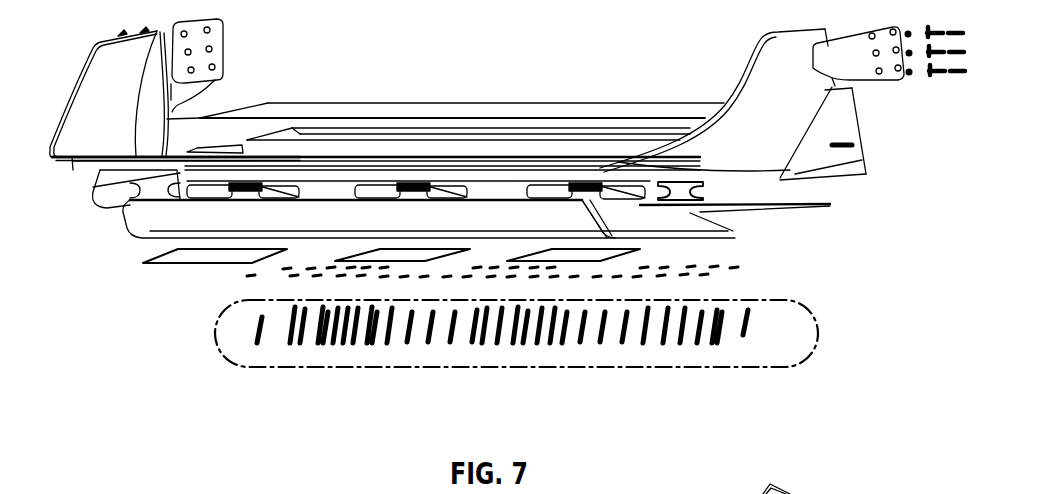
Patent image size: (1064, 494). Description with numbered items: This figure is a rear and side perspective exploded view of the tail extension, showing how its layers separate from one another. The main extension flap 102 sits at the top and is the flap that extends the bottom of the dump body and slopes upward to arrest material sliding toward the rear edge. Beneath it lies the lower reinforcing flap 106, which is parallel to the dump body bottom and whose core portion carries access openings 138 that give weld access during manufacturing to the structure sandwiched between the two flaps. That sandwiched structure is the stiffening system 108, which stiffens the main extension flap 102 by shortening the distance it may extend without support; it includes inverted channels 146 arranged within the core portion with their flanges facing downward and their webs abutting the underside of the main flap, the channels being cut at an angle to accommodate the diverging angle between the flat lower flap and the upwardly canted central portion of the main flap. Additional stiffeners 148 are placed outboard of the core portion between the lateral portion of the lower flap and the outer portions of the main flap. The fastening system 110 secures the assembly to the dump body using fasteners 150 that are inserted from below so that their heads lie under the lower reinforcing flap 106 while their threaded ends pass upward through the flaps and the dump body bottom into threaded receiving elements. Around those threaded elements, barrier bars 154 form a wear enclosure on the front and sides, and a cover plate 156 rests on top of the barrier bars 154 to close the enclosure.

The main extension flap 102 is at (863, 487).
The lower reinforcing flap 106 is at (858, 138).
The stiffening system 108 is at (640, 249).
The fastening system 110 is at (346, 136).
The access openings 138 is at (590, 185).
The inverted channels 146 is at (277, 190).
The additional stiffeners 148 is at (677, 182).
The fasteners 150 is at (622, 332).
The barrier bars 154 is at (210, 150).
The cover plate 156 is at (280, 107).